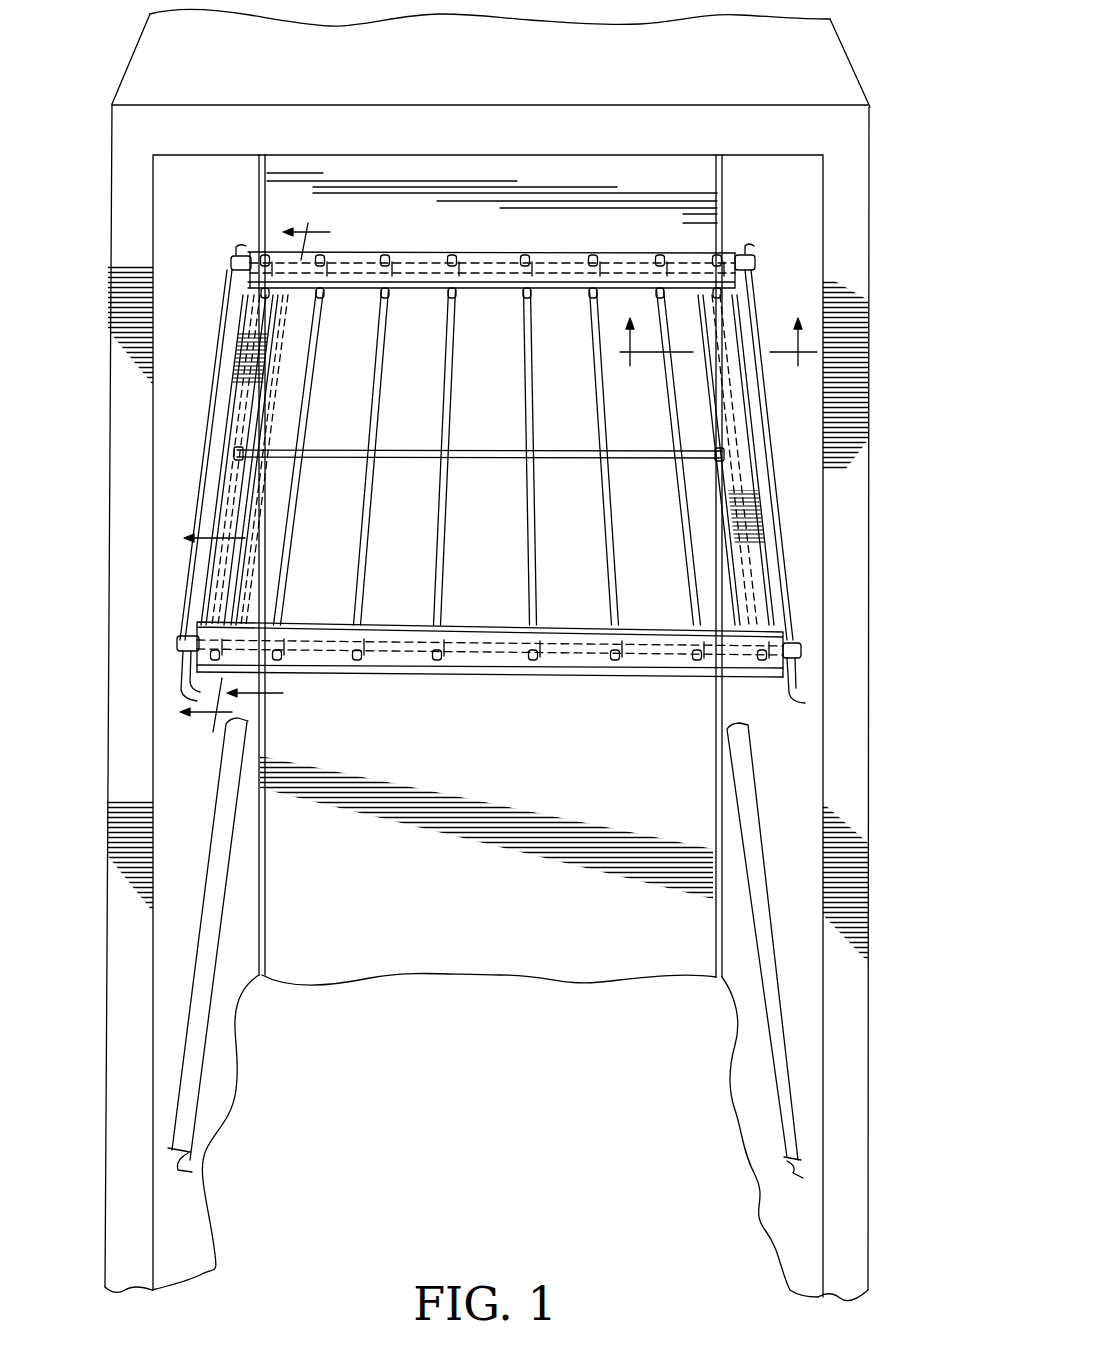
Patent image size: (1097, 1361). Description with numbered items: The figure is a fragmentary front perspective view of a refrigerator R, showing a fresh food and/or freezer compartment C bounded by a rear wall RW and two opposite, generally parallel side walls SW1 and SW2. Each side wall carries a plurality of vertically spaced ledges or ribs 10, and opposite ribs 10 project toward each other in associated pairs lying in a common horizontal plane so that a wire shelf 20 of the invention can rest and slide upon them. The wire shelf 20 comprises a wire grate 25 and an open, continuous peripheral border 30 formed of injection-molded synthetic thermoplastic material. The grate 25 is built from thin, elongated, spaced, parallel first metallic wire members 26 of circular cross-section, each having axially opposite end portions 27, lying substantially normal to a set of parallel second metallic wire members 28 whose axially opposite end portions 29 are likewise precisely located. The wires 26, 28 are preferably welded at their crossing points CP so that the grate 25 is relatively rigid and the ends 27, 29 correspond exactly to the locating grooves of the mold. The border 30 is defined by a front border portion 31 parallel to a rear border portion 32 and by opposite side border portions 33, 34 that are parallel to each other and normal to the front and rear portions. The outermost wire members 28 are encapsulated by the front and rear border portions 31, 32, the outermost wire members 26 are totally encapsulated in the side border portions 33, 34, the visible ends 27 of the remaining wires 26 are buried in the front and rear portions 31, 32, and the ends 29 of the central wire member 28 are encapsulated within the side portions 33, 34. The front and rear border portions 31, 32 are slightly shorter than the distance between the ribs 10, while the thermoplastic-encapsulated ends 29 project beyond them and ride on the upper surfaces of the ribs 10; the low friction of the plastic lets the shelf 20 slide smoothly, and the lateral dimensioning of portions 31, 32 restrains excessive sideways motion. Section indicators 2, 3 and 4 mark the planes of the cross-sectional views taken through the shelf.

The refrigerator R is at (874, 78).
The compartment C is at (330, 935).
The rear wall RW is at (462, 760).
The side wall SW1 is at (178, 197).
The side wall SW2 is at (805, 760).
The ledges or ribs 10 is at (205, 483).
The wire shelf 20 is at (487, 465).
The wire grate 25 is at (491, 435).
The first wire members 26 is at (735, 293).
The end portions 27 is at (385, 252).
The second wire members 28 is at (412, 258).
The end portions 29 is at (233, 262).
The peripheral border 30 is at (661, 682).
The front border portion 31 is at (507, 667).
The rear border portion 32 is at (490, 252).
The side border portion 33 is at (238, 300).
The side border portion 34 is at (765, 573).
The crossing points CP is at (577, 252).
The section line 2- 2 is at (278, 475).
The section line 3- 3 is at (205, 622).
The section line 4- 4 is at (718, 357).